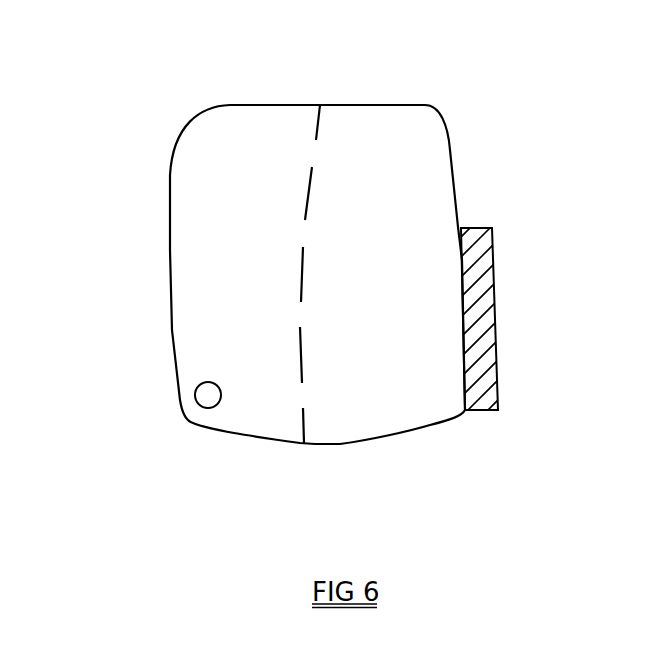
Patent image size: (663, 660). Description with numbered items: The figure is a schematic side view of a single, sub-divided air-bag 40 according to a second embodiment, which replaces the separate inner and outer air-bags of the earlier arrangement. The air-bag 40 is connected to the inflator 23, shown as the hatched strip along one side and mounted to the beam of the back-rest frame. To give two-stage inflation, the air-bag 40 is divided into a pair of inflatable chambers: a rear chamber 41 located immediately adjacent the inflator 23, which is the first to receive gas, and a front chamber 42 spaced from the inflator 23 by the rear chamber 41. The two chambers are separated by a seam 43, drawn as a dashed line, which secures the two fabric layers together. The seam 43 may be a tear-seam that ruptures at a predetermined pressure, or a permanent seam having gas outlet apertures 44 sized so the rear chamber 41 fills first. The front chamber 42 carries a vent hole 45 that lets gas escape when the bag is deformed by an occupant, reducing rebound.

The single air-bag 40 is at (318, 261).
The rear chamber 41 is at (437, 198).
The front chamber 42 is at (195, 174).
The seam 43 is at (321, 121).
The gas outlet apertures 44 is at (315, 152).
The vent hole 45 is at (199, 402).
The inflator 23 is at (490, 315).